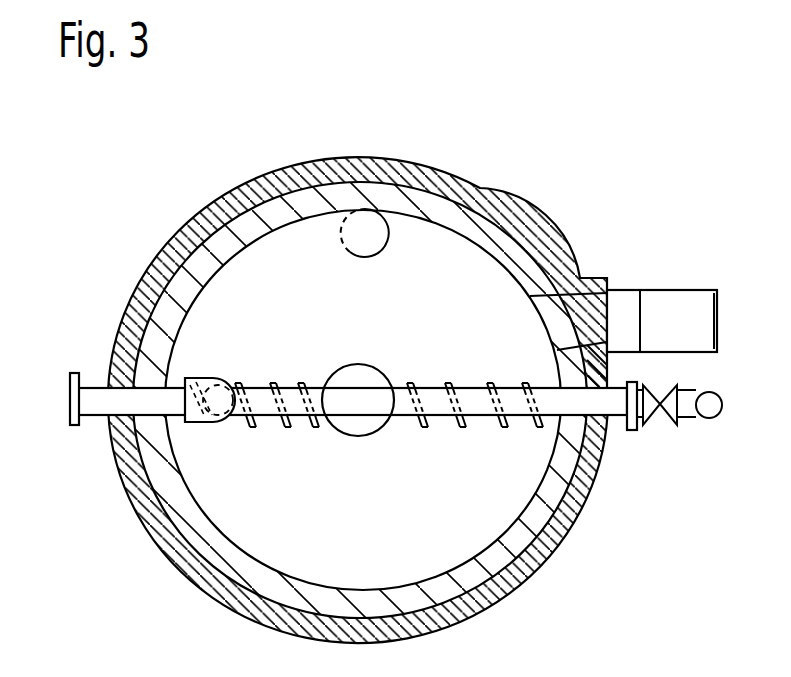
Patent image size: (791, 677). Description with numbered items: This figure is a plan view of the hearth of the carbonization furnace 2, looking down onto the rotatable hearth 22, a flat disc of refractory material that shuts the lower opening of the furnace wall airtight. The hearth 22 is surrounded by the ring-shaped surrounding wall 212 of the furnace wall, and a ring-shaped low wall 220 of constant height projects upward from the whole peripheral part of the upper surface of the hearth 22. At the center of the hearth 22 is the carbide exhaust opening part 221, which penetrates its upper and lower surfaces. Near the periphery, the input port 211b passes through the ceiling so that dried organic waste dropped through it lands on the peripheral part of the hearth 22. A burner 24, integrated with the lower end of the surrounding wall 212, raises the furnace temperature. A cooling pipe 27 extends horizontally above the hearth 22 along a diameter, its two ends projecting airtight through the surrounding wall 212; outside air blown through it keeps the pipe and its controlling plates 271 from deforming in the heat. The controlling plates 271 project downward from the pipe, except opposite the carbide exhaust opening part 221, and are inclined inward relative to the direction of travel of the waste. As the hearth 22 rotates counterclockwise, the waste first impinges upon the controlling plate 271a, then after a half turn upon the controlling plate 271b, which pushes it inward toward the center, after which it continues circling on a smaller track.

The carbonization furnace 2 is at (384, 380).
The hearth 22 is at (424, 230).
The burner 24 is at (675, 302).
The cooling pipe 27 is at (92, 402).
The surrounding wall 212 is at (520, 212).
The ring-shaped low wall 220 is at (302, 200).
The carbide exhaust opening part 221 is at (352, 436).
The input port 211b is at (368, 225).
The controlling plates 271 is at (252, 427).
The controlling plate 271a is at (187, 425).
The controlling plate 271b is at (497, 383).